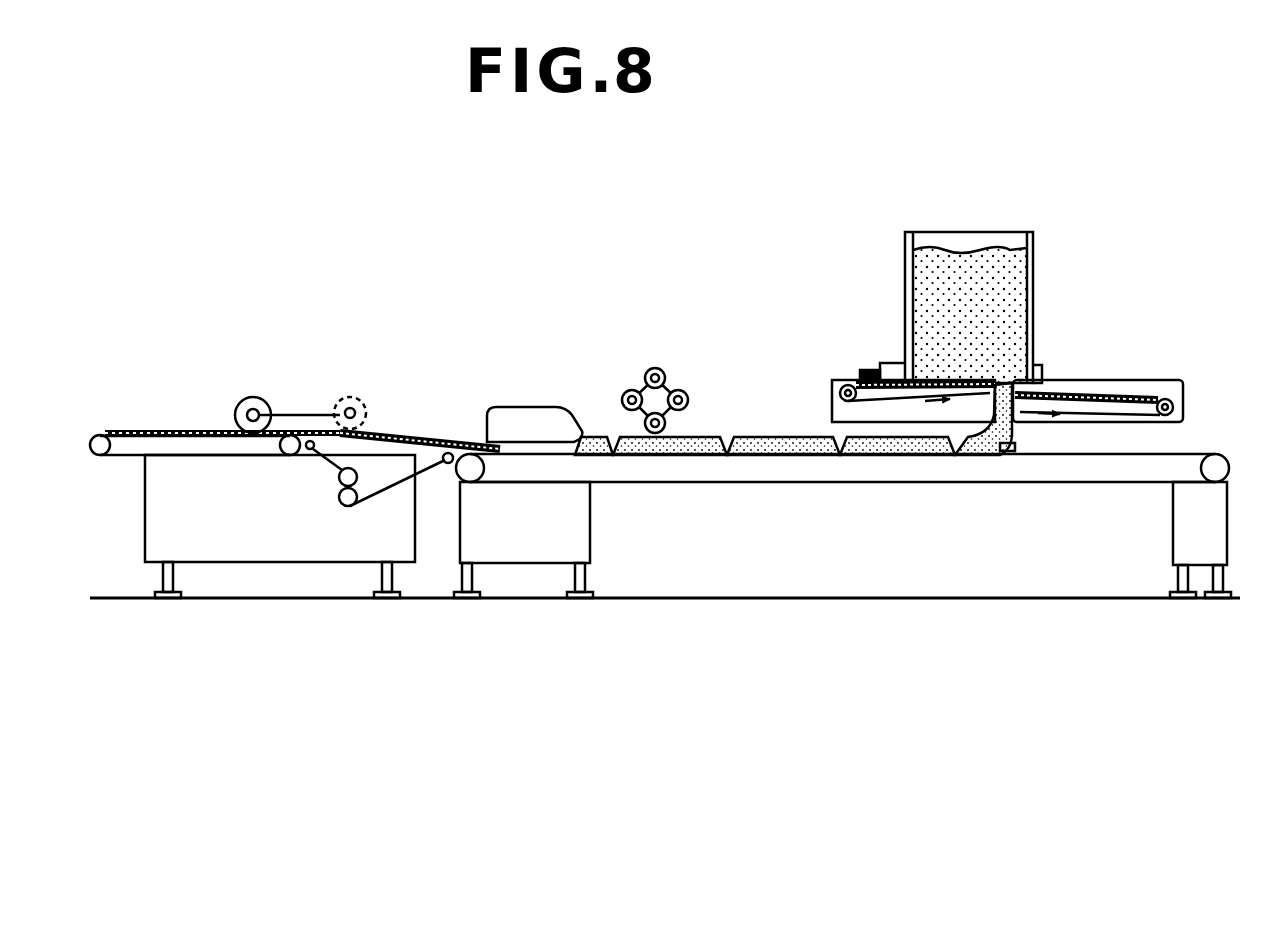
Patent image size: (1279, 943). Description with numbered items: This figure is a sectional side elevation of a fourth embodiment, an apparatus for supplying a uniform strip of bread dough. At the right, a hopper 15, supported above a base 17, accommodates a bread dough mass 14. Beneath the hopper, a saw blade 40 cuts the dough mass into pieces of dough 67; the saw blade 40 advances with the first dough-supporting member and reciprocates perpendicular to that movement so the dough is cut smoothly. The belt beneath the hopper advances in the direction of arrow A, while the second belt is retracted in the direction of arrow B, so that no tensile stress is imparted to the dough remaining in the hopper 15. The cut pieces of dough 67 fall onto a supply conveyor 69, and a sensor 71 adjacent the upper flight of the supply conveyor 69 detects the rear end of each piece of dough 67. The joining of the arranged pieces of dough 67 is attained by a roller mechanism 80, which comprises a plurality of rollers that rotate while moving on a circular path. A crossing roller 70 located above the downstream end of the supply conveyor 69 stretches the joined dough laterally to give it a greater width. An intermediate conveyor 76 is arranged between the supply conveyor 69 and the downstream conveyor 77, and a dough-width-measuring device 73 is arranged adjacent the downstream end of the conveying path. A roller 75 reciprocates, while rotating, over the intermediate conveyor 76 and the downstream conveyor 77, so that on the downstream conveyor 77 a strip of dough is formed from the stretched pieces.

The bread dough mass 14 is at (982, 250).
The hopper 15 is at (1034, 250).
The base 17 is at (1160, 380).
The saw blade 40 is at (1008, 378).
The pieces of dough 67 is at (708, 434).
The supply conveyor 69 is at (1185, 455).
The crossing roller 70 is at (528, 407).
The sensor 71 is at (1012, 458).
The dough-width-measuring device 73 is at (365, 426).
The roller 75 is at (253, 396).
The intermediate conveyor 76 is at (382, 498).
The downstream conveyor 77 is at (203, 458).
The roller mechanism 80 is at (672, 366).
The arrow A is at (952, 398).
The arrow B is at (1030, 418).